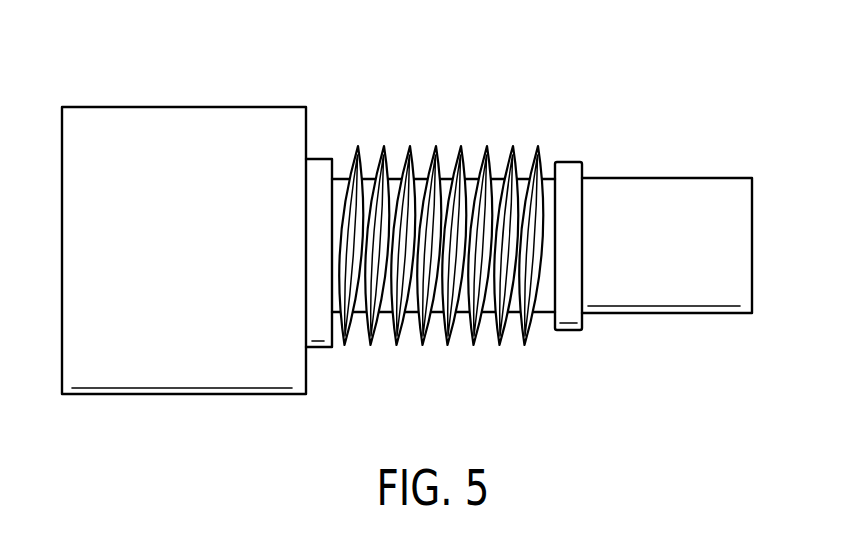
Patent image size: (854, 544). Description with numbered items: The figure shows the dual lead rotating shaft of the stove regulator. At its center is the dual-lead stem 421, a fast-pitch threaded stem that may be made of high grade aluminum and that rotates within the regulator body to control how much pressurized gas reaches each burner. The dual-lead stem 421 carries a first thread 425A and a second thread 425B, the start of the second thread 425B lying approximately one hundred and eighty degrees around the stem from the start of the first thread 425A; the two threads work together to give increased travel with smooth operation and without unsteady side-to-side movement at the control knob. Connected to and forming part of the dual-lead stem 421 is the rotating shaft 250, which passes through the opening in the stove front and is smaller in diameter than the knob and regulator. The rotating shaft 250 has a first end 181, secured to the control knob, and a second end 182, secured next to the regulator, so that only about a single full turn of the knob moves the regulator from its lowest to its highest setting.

The first end 181 is at (691, 273).
The second end 182 is at (333, 178).
The rotating shaft 250 is at (665, 285).
The dual-lead stem 421 is at (443, 238).
The first thread 425A is at (546, 167).
The second thread 425B is at (500, 328).